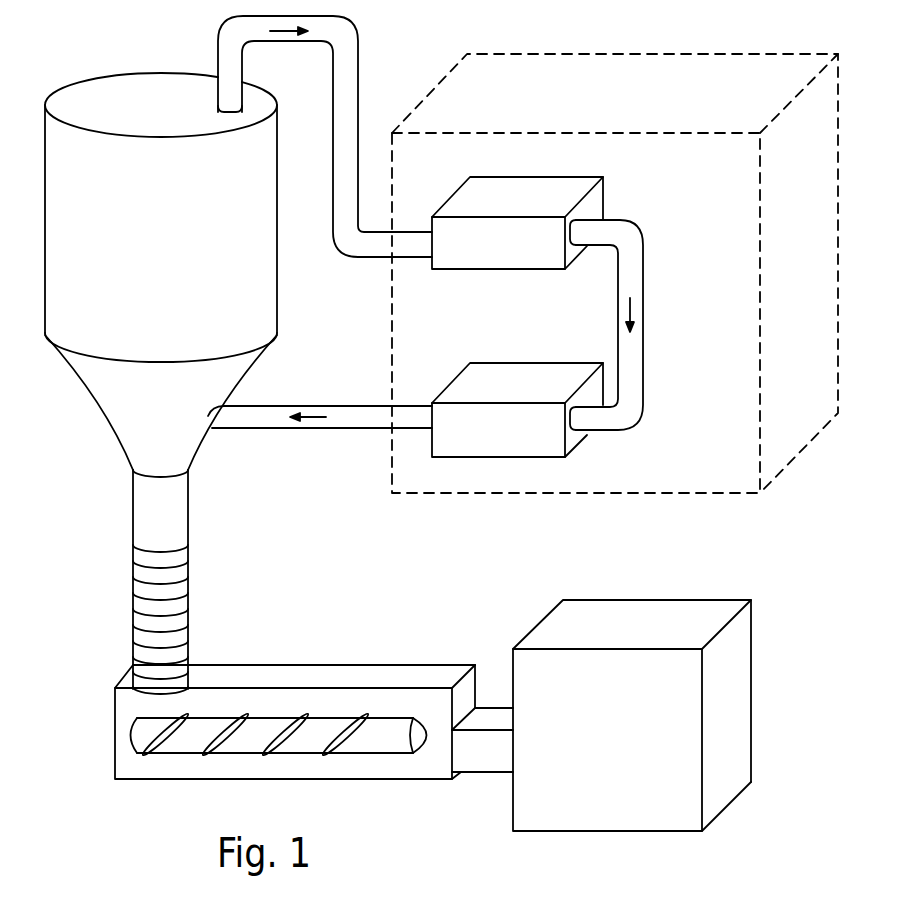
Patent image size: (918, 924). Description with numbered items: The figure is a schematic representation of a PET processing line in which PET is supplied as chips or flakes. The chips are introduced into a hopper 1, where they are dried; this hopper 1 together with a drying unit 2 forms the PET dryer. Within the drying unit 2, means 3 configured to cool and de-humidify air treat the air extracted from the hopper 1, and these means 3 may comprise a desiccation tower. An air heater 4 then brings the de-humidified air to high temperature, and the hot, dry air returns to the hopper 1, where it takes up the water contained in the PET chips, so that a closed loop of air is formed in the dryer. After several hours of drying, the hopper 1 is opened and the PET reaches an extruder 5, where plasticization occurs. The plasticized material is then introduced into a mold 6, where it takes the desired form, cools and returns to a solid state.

The hopper 1 is at (155, 253).
The drying unit 2 is at (715, 108).
The means configured to cool and de-humidify air 3 is at (493, 252).
The air heater 4 is at (493, 446).
The extruder 5 is at (377, 767).
The mold 6 is at (602, 751).